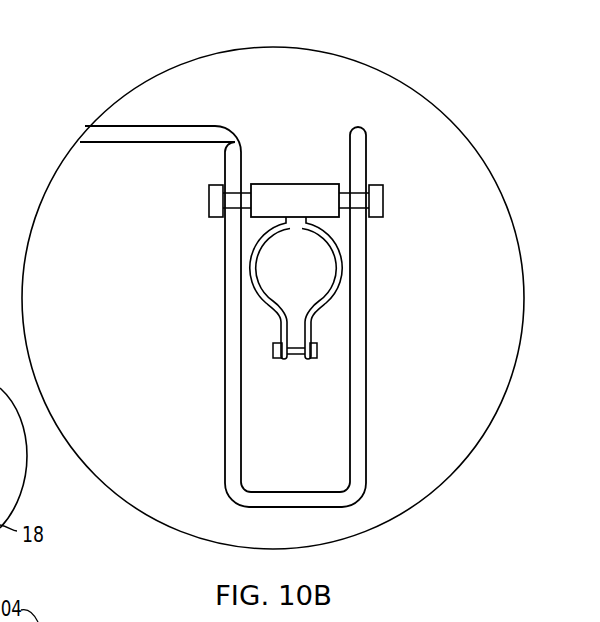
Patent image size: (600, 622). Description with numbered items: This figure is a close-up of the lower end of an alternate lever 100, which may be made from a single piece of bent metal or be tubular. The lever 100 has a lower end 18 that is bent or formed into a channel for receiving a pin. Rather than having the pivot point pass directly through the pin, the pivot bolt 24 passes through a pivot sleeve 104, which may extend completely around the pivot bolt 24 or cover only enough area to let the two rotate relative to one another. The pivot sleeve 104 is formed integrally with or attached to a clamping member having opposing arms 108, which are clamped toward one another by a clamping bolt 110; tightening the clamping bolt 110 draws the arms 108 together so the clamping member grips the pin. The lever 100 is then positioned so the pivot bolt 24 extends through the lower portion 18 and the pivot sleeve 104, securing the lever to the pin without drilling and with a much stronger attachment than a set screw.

The lever 100 is at (155, 135).
The pivot sleeve 104 is at (317, 203).
The pivot bolt 24 is at (373, 203).
The opposing arms 108 is at (256, 291).
The clamping bolt 110 is at (313, 352).
The lower end 18 is at (355, 427).